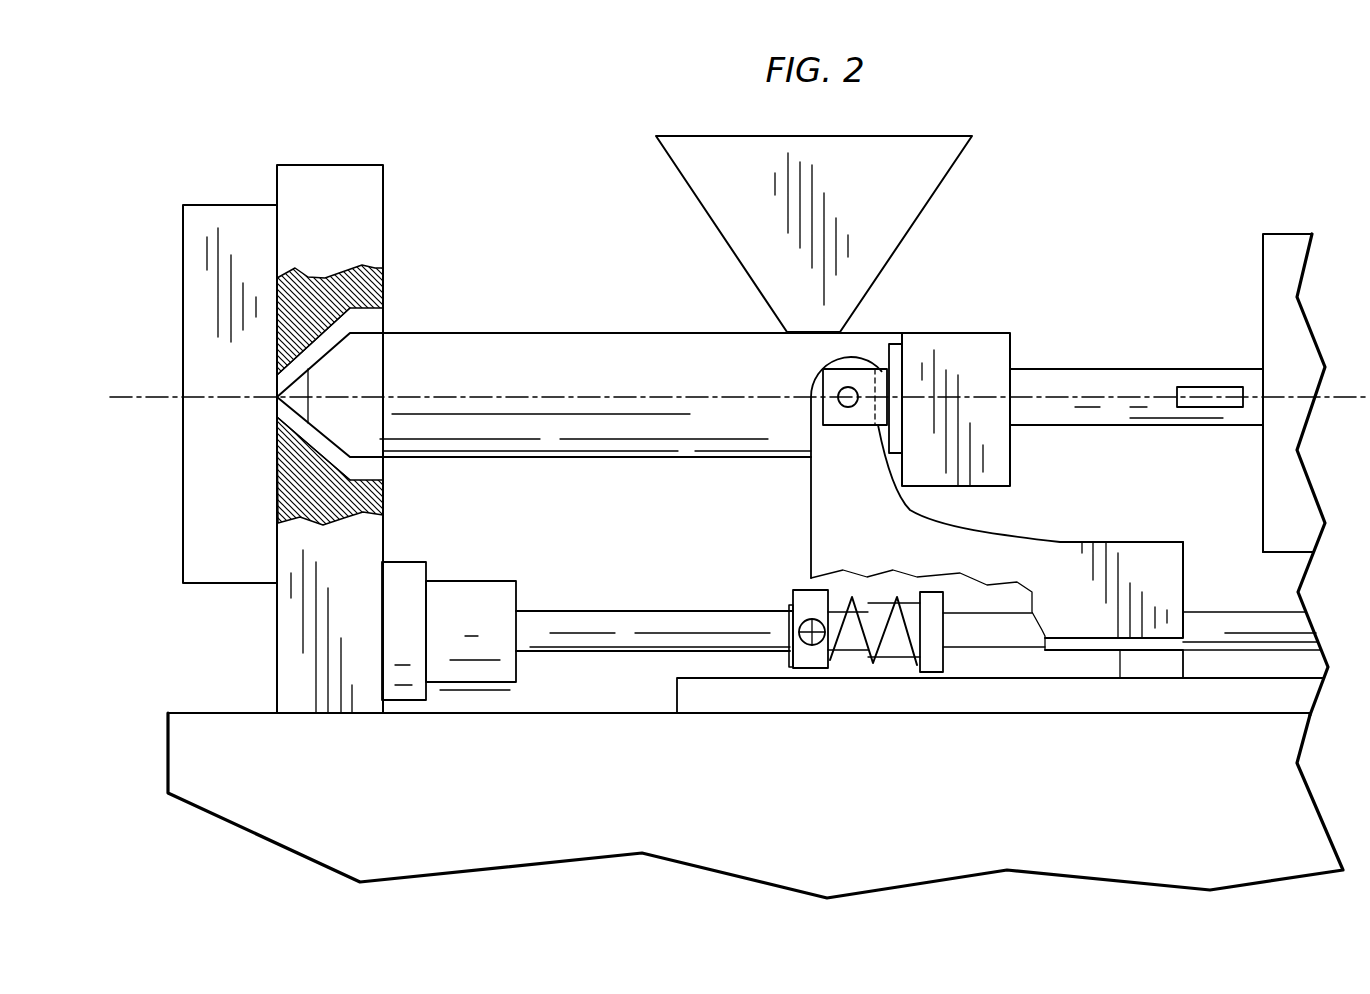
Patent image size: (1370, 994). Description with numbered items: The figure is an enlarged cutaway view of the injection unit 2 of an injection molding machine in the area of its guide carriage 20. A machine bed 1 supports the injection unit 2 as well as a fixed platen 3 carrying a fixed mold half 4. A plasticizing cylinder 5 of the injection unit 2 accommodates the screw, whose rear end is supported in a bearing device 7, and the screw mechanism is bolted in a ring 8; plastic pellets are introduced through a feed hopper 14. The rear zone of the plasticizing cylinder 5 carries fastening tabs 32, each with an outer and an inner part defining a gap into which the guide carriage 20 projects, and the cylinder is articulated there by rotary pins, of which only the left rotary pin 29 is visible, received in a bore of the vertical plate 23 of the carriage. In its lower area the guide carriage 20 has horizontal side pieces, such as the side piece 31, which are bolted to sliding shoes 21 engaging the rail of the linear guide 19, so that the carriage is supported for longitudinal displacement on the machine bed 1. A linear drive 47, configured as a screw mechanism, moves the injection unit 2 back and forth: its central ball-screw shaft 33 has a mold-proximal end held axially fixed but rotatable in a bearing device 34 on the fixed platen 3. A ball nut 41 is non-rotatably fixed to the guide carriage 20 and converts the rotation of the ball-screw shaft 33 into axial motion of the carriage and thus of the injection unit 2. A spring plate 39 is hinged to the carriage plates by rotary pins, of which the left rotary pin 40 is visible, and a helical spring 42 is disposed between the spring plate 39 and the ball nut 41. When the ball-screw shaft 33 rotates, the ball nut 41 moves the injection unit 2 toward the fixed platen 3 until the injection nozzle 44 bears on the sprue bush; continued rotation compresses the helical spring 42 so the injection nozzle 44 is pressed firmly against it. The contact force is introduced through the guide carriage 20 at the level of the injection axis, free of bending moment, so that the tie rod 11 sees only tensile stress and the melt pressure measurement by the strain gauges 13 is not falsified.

The machine bed 1 is at (212, 803).
The injection unit 2 is at (1148, 206).
The fixed platen 3 is at (328, 165).
The fixed mold half 4 is at (183, 546).
The plasticizing cylinder 5 is at (458, 333).
The bearing device 7 is at (962, 333).
The ring 8 is at (1263, 276).
The tie rod 11 is at (1128, 368).
The strain gauges 13 is at (1202, 408).
The feed hopper 14 is at (692, 190).
The linear guide 19 is at (1235, 705).
The guide carriage 20 is at (811, 491).
The sliding shoes 21 is at (1148, 665).
The vertical plate 23 is at (1060, 558).
The rotary pin 29 is at (838, 401).
The horizontal side piece 31 is at (1072, 652).
The fastening tabs 32 is at (862, 380).
The ball-screw shaft 33 is at (598, 611).
The bearing device 34 is at (455, 581).
The spring plate 39 is at (800, 590).
The rotary pin 40 is at (800, 628).
The ball nut 41 is at (935, 672).
The helical spring 42 is at (852, 656).
The injection nozzle 44 is at (278, 397).
The linear drive 47 is at (628, 650).